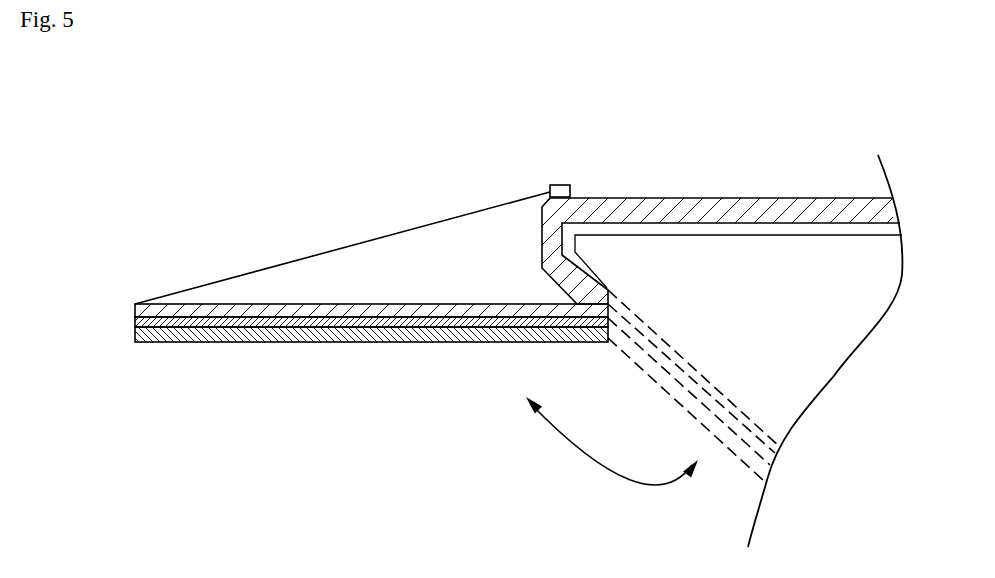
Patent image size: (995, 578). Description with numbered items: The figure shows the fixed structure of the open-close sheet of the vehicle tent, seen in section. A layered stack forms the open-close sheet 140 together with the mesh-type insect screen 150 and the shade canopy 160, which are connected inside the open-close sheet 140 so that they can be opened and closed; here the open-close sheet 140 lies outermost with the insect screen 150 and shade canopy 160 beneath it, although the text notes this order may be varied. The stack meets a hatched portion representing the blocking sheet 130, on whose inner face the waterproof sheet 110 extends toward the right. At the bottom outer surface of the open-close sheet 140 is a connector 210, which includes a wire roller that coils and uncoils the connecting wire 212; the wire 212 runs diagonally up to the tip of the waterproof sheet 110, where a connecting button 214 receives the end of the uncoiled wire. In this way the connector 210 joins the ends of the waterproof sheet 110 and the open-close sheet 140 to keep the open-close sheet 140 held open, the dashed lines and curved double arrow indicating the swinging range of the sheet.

The waterproof sheet 110 is at (750, 204).
The blocking sheet 130 is at (647, 204).
The open-close sheet 140 is at (197, 313).
The insect screen 150 is at (285, 322).
The shade canopy 160 is at (372, 335).
The connector 210 is at (359, 332).
The connecting wire 212 is at (337, 248).
The connecting button 214 is at (558, 185).